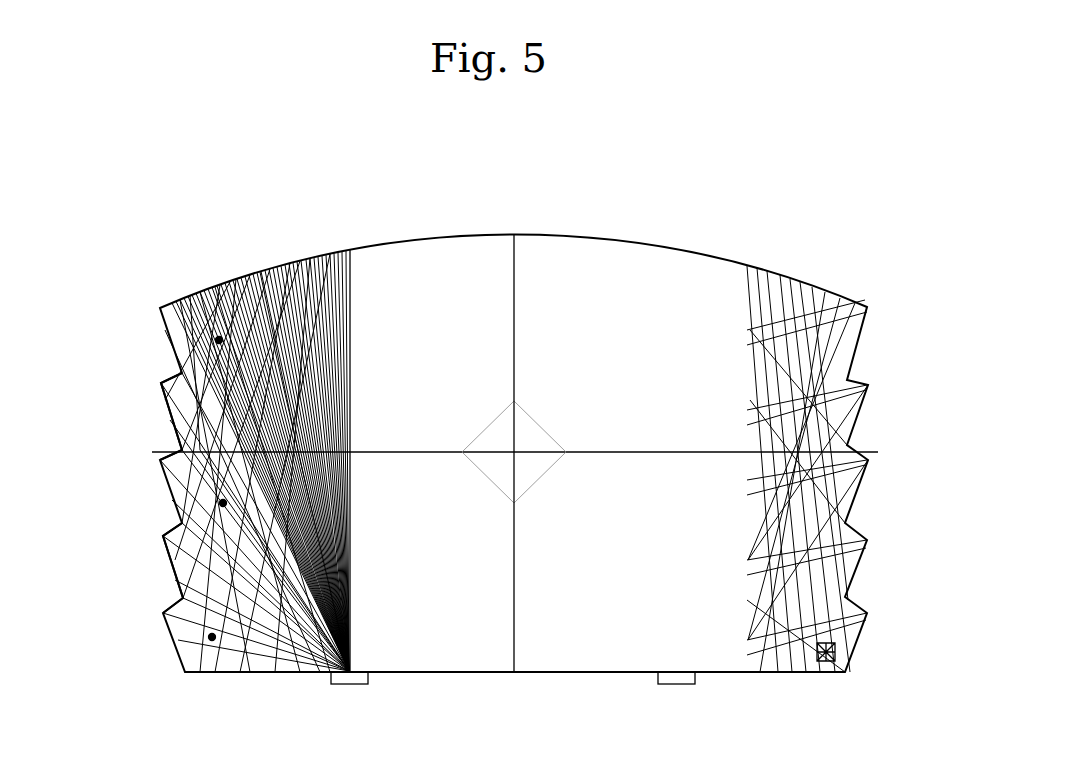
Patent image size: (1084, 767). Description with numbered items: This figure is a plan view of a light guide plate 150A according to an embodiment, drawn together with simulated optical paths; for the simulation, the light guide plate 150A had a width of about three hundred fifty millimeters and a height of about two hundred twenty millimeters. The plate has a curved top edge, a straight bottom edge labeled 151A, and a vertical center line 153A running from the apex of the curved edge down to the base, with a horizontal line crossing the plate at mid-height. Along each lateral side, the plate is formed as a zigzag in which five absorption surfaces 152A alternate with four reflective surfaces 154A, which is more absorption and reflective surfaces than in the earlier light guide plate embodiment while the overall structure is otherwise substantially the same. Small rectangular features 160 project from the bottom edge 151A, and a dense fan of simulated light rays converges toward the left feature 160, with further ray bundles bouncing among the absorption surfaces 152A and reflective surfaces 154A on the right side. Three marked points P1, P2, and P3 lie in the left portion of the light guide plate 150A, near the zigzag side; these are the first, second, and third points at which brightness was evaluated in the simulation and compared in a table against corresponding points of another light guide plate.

The light guide plate 150A is at (705, 217).
The bottom surface 151A is at (596, 673).
The absorption surfaces 152A is at (183, 572).
The center line 153A is at (514, 232).
The reflective surfaces 154A is at (177, 527).
The light source 160 is at (348, 676).
The first point P1 is at (219, 340).
The second point P2 is at (223, 503).
The third point P3 is at (212, 637).